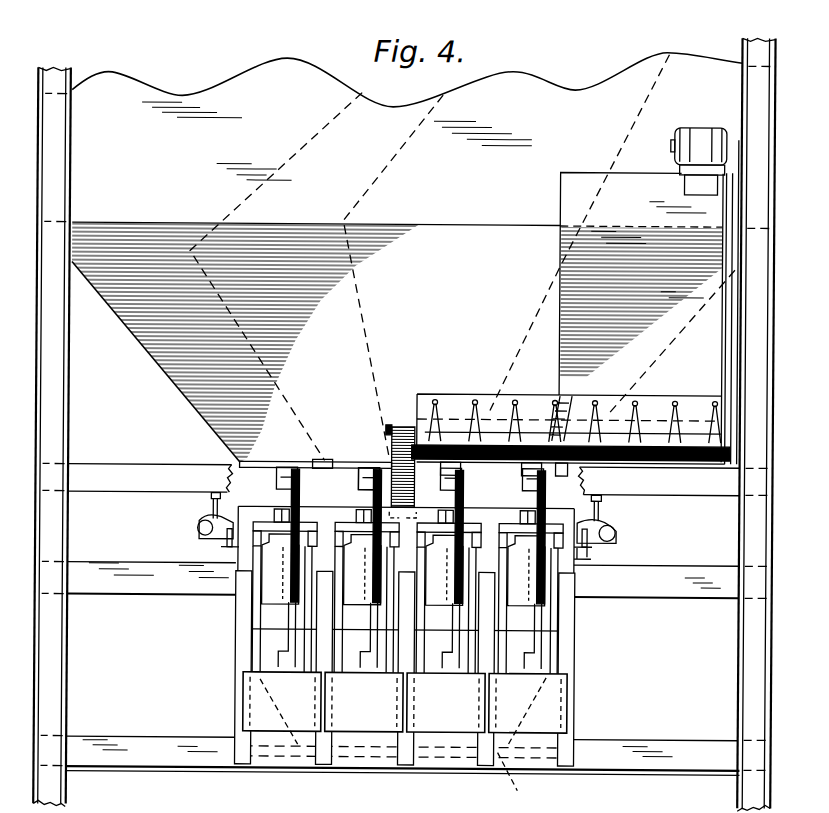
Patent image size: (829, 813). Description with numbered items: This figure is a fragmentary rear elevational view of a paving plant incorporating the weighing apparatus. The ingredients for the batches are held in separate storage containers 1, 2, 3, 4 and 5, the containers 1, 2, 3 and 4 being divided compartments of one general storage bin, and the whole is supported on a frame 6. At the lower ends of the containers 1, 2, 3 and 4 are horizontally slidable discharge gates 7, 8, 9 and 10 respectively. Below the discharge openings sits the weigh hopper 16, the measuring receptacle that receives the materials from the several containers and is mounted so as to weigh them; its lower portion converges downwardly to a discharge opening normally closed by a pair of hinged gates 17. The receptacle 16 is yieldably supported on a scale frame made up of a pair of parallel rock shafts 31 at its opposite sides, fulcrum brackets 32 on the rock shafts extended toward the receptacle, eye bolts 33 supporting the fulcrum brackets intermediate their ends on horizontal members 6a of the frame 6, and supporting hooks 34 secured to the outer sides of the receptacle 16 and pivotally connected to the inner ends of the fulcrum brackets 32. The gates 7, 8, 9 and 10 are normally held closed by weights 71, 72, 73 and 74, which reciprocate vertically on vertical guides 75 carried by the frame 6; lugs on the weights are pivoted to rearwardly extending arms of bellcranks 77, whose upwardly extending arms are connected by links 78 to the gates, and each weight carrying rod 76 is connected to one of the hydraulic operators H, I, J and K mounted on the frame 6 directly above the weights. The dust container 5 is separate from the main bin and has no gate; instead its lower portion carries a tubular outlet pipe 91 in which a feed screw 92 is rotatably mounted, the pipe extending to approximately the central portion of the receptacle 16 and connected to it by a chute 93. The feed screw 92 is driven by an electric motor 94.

The storage container 1 is at (257, 97).
The storage container 2 is at (365, 165).
The storage container 3 is at (572, 199).
The storage container 4 is at (640, 355).
The dust container 5 is at (586, 292).
The frame 6 is at (53, 645).
The horizontal members 6a is at (695, 598).
The gate 7 is at (258, 463).
The gate 8 is at (360, 488).
The gate 9 is at (482, 455).
The gate 10 is at (562, 402).
The weigh hopper 16 is at (257, 662).
The gates 17 is at (402, 744).
The rock shafts 31 is at (600, 541).
The fulcrum brackets 32 is at (616, 529).
The eye bolts 33 is at (602, 512).
The supporting hooks 34 is at (596, 550).
The weight 71 is at (282, 702).
The weight 72 is at (364, 702).
The weight 73 is at (446, 703).
The weight 74 is at (528, 704).
The vertical guides 75 is at (572, 723).
The weight carrying rods 76 is at (255, 638).
The bellcranks 77 is at (376, 494).
The links 78 is at (530, 492).
The outlet pipe 91 is at (513, 440).
The feed screw 92 is at (472, 395).
The chute 93 is at (405, 458).
The electric motor 94 is at (694, 137).